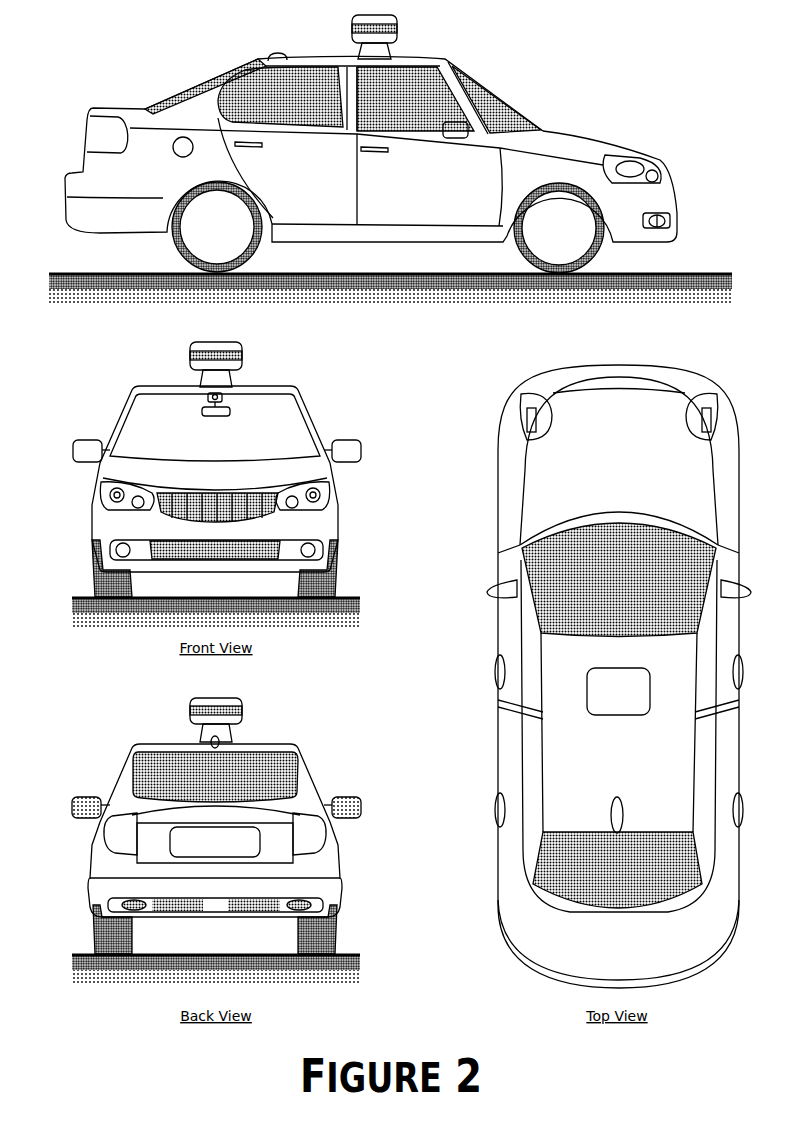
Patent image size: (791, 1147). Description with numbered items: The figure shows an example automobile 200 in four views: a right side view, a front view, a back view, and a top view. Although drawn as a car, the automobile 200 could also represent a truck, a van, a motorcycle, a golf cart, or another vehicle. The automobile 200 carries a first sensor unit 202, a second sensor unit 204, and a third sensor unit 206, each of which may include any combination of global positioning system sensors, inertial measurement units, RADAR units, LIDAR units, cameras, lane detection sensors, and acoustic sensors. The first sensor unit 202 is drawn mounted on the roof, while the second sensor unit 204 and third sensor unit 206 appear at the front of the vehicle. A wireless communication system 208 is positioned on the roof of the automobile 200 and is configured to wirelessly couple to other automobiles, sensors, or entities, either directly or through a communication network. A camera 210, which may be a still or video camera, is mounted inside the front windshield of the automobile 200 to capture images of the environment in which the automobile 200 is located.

The automobile 200 is at (62, 102).
The first sensor unit 202 is at (398, 32).
The second sensor unit 204 is at (665, 173).
The third sensor unit 206 is at (672, 220).
The wireless communication system 208 is at (277, 54).
The camera 210 is at (230, 404).